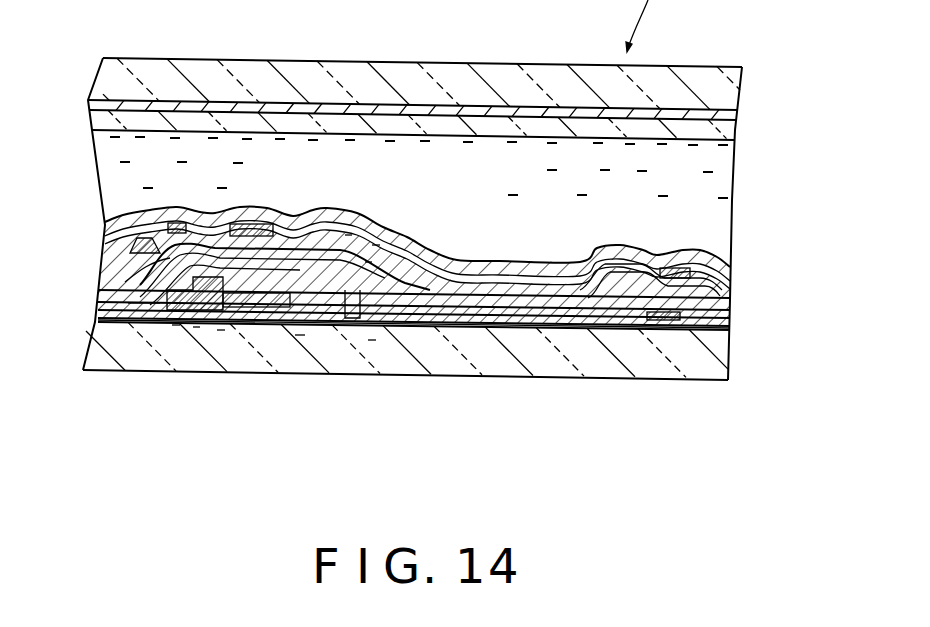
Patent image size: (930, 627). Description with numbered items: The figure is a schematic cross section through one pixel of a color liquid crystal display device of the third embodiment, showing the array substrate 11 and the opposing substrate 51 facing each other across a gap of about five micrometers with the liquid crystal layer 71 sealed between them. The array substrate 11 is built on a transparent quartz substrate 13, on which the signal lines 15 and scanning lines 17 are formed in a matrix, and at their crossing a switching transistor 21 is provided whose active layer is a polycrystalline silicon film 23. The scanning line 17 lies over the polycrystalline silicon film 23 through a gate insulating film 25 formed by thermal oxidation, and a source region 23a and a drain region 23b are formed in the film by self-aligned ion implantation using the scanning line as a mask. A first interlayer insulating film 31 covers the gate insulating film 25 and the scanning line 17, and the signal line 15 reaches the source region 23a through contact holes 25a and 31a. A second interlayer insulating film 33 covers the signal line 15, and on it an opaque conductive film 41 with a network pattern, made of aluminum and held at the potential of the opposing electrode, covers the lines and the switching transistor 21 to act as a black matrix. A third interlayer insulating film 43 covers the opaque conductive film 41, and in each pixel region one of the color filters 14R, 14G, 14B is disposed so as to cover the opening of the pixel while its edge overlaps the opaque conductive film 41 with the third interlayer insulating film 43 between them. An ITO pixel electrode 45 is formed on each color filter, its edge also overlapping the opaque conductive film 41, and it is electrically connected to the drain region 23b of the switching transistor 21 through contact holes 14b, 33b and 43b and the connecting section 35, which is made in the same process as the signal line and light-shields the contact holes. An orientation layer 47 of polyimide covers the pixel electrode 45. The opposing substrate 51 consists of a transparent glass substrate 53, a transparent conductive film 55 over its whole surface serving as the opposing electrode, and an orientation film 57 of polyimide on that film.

The array substrate 11 is at (740, 345).
The substrate 13 is at (626, 335).
The red color filter 14R is at (148, 250).
The green color filter 14G is at (250, 222).
The blue color filter 14B is at (740, 298).
The contact hole 14b is at (345, 235).
The signal line 15 is at (207, 330).
The scanning line 17 is at (292, 330).
The switching transistor 21 is at (318, 455).
The polycrystalline silicon film 23 is at (295, 335).
The source region 23a is at (217, 330).
The drain region 23b is at (368, 340).
The gate insulating film 25 is at (172, 325).
The contact hole 25a is at (193, 327).
The first interlayer insulating film 31 is at (160, 335).
The contact hole 31a is at (112, 324).
The second interlayer insulating film 33 is at (128, 303).
The contact hole 33b is at (365, 262).
The connecting section 35 is at (352, 335).
The opaque conductive film 41 is at (143, 240).
The third interlayer insulating film 43 is at (125, 282).
The contact hole 43b is at (372, 245).
The pixel electrode 45 is at (512, 300).
The orientation layer 47 is at (738, 273).
The opposing substrate 51 is at (780, 78).
The glass substrate 53 is at (703, 86).
The transparent conductive film 55 is at (735, 117).
The orientation film 57 is at (732, 133).
The liquid crystal layer 71 is at (717, 200).